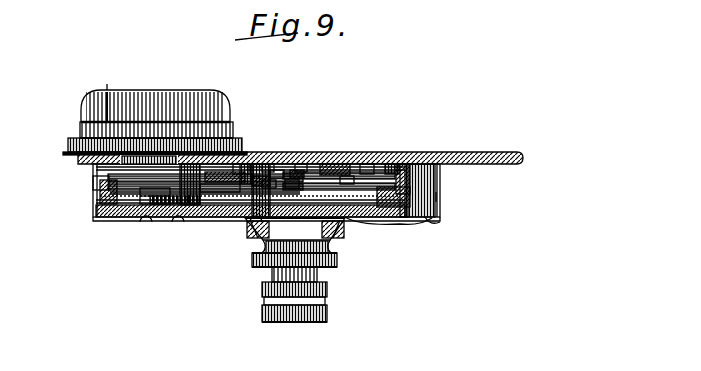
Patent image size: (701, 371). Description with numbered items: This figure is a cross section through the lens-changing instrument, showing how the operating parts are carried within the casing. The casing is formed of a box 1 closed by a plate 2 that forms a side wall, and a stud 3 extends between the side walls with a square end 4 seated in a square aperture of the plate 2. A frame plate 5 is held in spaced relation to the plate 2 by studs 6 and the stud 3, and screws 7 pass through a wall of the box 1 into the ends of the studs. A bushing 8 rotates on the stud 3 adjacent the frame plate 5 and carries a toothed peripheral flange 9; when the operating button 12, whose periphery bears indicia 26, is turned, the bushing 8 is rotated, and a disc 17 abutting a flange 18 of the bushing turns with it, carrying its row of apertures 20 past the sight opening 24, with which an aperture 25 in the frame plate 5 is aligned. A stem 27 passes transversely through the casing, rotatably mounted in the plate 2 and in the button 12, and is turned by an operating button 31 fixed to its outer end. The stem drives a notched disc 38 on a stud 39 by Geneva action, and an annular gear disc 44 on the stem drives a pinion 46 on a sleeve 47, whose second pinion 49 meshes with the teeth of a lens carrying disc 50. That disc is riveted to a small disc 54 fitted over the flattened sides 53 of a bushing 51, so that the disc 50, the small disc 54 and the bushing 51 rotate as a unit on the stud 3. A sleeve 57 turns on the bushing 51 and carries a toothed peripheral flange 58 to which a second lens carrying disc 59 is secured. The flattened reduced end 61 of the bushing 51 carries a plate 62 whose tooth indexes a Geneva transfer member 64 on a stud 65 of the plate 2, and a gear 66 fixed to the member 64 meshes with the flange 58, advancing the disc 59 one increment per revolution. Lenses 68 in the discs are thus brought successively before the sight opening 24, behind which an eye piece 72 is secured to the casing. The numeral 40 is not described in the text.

The box 1 is at (434, 188).
The plate 2 is at (502, 153).
The stud 3 is at (200, 230).
The square end 4 is at (275, 158).
The frame plate 5 is at (111, 219).
The studs 6 is at (152, 211).
The screws 7 is at (436, 219).
The bushing 8 is at (235, 213).
The peripheral flange 9 is at (188, 219).
The operating button 12 is at (249, 265).
The disc 17 is at (108, 191).
The flange 18 is at (213, 210).
The apertures 20 is at (114, 198).
The sight opening 24 is at (128, 218).
The aperture 25 is at (155, 219).
The indicia 26 is at (280, 243).
The stem 27 is at (334, 157).
The operating button 31 is at (268, 309).
The disc 38 is at (365, 222).
The stud 39 is at (334, 230).
The pawl 40 is at (353, 230).
The annular gear disc 44 is at (434, 223).
The pinion 46 is at (436, 197).
The sleeve 47 is at (414, 164).
The pinion 49 is at (425, 165).
The lens carrying disc 50 is at (97, 181).
The bushing 51 is at (249, 153).
The flattened sides 53 is at (268, 160).
The small disc 54 is at (292, 160).
The sleeve 57 is at (297, 160).
The peripheral flange 58 is at (241, 152).
The lens carrying disc 59 is at (96, 169).
The flattened reduced end 61 is at (266, 158).
The plate 62 is at (300, 157).
The Geneva transfer member 64 is at (368, 155).
The stud 65 is at (346, 160).
The gear 66 is at (394, 152).
The lenses 68 is at (104, 174).
The eye piece 72 is at (155, 111).